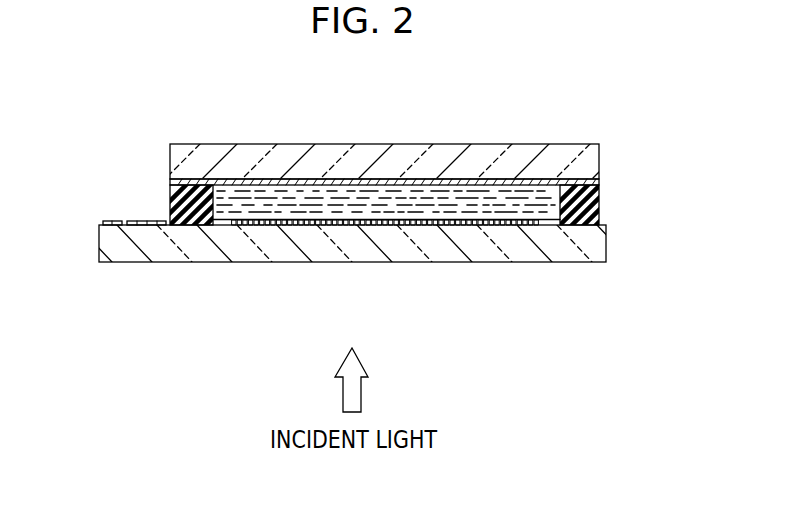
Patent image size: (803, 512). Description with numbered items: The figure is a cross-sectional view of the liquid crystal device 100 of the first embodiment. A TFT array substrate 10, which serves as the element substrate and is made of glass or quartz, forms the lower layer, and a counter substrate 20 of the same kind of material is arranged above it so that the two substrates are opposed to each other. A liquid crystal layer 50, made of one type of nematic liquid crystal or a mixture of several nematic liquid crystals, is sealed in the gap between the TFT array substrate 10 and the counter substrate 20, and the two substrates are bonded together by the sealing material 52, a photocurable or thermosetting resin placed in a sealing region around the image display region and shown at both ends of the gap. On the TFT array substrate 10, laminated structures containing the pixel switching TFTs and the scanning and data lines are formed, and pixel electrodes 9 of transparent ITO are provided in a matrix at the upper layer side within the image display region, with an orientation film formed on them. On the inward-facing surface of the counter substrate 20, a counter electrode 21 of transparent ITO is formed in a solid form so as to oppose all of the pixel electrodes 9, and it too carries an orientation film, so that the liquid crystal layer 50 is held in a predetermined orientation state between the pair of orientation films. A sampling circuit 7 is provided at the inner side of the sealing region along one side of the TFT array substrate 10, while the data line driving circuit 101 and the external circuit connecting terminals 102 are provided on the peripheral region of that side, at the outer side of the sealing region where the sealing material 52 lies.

The liquid crystal device 100 is at (577, 92).
The counter substrate 20 is at (293, 151).
The counter electrode 21 is at (476, 183).
The sealing material 52 is at (168, 198).
The liquid crystal layer 50 is at (338, 225).
The sampling circuit 7 is at (238, 225).
The pixel electrodes 9 is at (282, 225).
The TFT array substrate 10 is at (397, 252).
The data line driving circuit 101 is at (147, 220).
The external circuit connecting terminals 102 is at (118, 223).